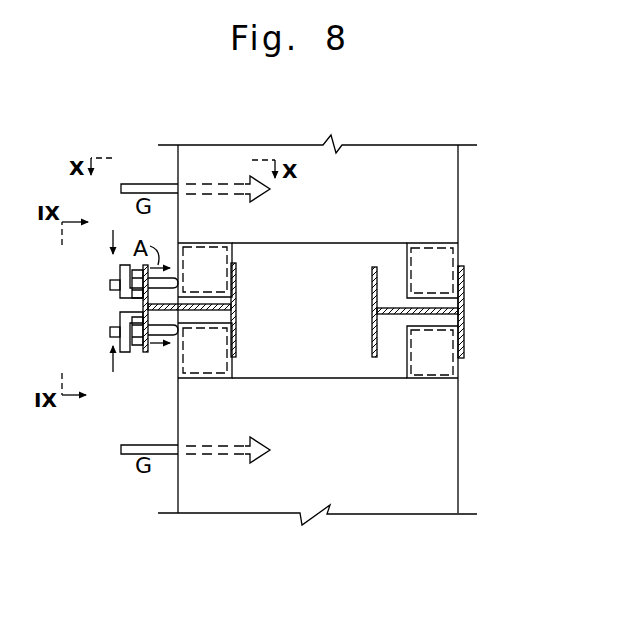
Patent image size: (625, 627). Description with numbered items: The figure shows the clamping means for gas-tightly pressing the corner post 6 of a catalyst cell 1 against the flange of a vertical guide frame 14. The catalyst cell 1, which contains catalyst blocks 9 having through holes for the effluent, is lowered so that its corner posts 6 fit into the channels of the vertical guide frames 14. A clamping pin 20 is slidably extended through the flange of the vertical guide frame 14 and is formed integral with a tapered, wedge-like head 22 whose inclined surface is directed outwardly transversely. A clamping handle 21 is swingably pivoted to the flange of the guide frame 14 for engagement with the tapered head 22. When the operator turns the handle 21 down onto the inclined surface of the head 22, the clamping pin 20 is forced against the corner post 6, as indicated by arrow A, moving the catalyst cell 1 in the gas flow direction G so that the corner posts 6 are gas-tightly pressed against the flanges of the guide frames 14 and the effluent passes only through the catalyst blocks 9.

The catalyst cell 1 is at (448, 183).
The catalyst block 9 is at (193, 152).
The corner post 6 is at (217, 263).
The vertical guide frame 14 is at (236, 302).
The clamping pin 20 is at (150, 353).
The clamping handle 21 is at (108, 283).
The tapered head 22 is at (116, 297).